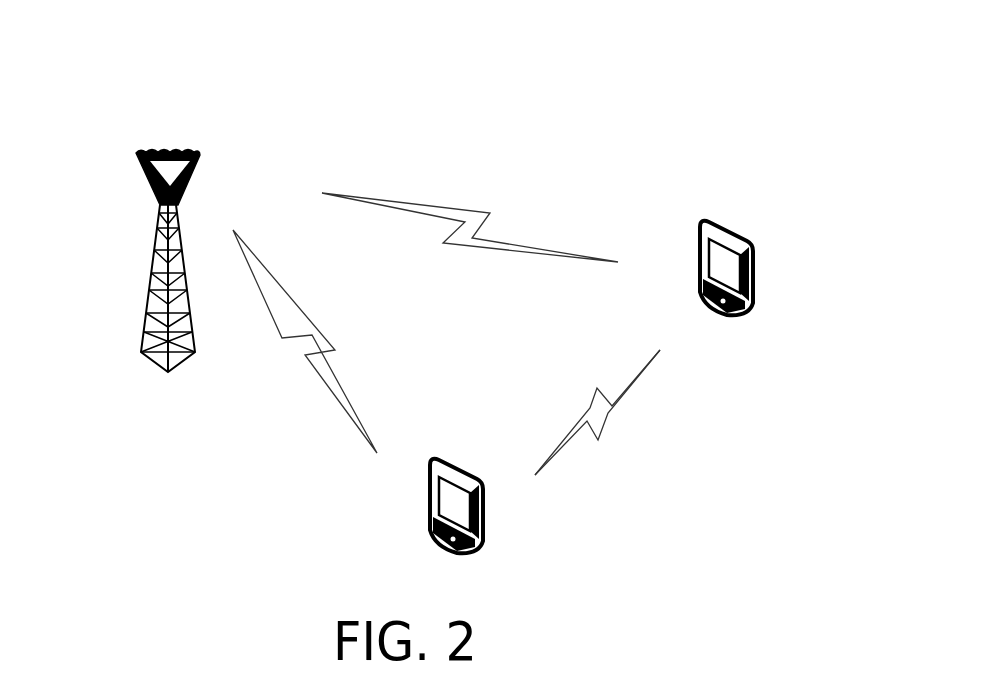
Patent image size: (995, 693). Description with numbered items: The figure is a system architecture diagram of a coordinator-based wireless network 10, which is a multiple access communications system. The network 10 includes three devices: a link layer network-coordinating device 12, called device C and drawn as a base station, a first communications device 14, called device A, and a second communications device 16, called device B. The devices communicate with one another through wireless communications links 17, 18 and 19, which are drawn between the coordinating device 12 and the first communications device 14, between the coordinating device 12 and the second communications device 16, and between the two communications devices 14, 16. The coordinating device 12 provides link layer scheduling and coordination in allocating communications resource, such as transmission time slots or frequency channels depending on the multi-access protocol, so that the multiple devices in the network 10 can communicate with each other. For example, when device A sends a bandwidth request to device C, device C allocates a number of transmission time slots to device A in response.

The coordinator-based wireless network 10 is at (617, 75).
The link layer network-coordinating device 12 is at (203, 166).
The first communications device 14 is at (485, 513).
The second communications device 16 is at (755, 274).
The wireless communications link 17 is at (333, 393).
The wireless communications link 18 is at (450, 212).
The wireless communications link 19 is at (633, 392).